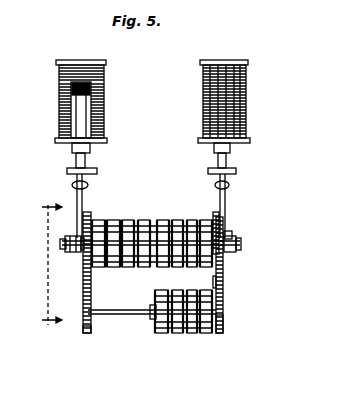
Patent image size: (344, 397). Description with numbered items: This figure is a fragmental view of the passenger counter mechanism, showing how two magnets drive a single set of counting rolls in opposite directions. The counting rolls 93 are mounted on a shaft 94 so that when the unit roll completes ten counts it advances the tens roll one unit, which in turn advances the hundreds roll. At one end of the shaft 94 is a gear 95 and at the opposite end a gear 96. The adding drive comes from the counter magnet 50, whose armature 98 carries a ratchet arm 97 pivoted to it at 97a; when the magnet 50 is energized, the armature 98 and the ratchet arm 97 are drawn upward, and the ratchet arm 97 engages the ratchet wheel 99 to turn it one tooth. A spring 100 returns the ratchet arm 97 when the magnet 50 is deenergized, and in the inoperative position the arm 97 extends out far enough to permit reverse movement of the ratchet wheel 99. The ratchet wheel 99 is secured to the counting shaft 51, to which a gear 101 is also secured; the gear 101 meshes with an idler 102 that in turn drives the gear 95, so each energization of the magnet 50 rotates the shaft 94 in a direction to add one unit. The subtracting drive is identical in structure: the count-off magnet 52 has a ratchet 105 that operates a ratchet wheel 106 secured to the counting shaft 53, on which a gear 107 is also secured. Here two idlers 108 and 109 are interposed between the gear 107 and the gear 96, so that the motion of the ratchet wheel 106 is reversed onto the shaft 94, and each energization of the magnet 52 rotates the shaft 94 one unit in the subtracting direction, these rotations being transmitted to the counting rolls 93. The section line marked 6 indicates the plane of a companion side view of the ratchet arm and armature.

The magnet 50 is at (59, 118).
The magnet 52 is at (247, 89).
The spring 100 is at (82, 85).
The armature 98 is at (92, 166).
The ratchet arm 97 is at (83, 200).
The pivot 97a is at (88, 184).
The ratchet 105 is at (226, 210).
The ratchet wheel 106 is at (233, 233).
The gear 107 is at (214, 212).
The section line 6 is at (43, 265).
The counting shaft 53 is at (241, 244).
The counting shaft 51 is at (66, 238).
The ratchet wheel 99 is at (62, 244).
The gear 101 is at (83, 258).
The idler 102 is at (92, 283).
The gear 95 is at (85, 333).
The idler 108 is at (224, 262).
The idler 109 is at (224, 281).
The gear 96 is at (224, 320).
The shaft 94 is at (140, 316).
The counting rolls 93 is at (190, 334).